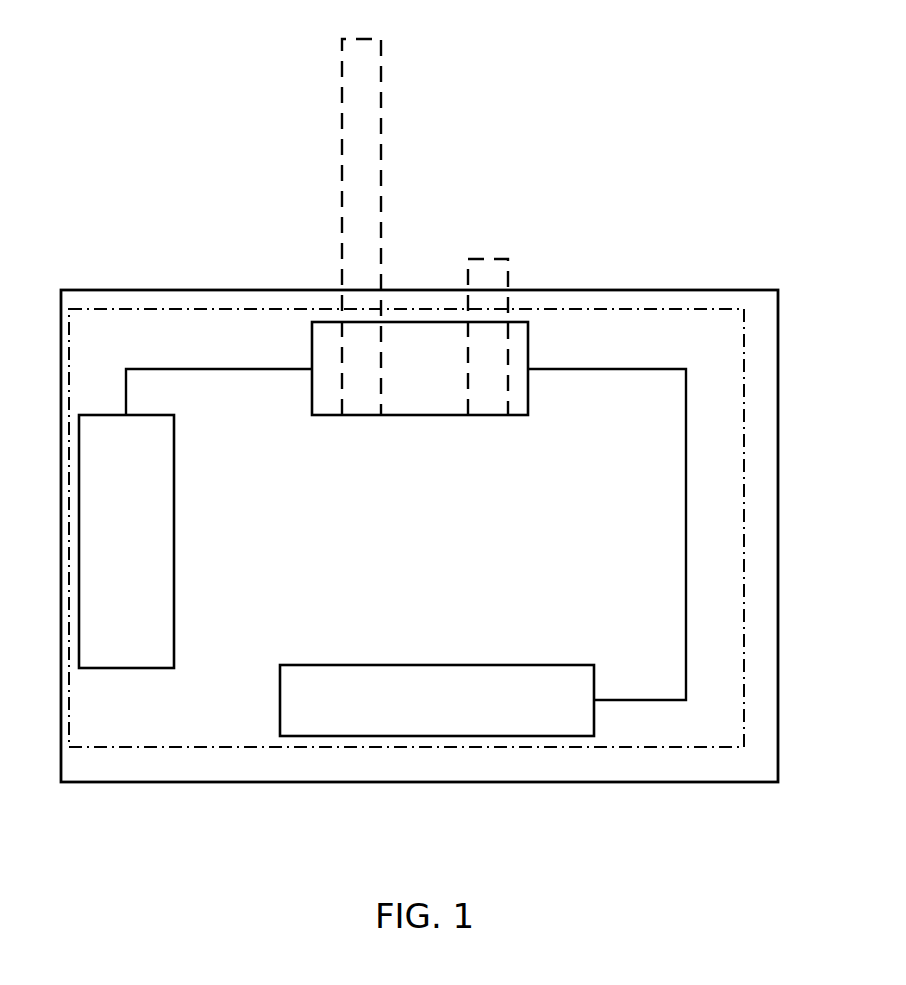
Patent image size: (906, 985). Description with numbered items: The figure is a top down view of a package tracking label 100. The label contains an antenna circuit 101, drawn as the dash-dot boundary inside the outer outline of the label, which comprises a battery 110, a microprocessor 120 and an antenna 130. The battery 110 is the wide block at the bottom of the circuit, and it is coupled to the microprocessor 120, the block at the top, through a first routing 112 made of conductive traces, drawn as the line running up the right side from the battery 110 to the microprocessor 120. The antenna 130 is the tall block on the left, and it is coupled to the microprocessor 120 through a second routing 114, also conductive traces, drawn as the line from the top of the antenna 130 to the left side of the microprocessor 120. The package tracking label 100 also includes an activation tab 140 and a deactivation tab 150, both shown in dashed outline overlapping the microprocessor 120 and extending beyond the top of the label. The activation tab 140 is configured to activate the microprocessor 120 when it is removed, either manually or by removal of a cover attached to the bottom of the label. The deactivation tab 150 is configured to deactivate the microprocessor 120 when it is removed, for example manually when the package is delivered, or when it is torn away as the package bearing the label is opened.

The package tracking label 100 is at (423, 540).
The antenna circuit 101 is at (655, 308).
The battery 110 is at (445, 664).
The first routing 112 is at (686, 535).
The second routing 114 is at (218, 367).
The microprocessor 120 is at (438, 383).
The antenna 130 is at (138, 669).
The activation tab 140 is at (488, 259).
The deactivation tab 150 is at (368, 39).